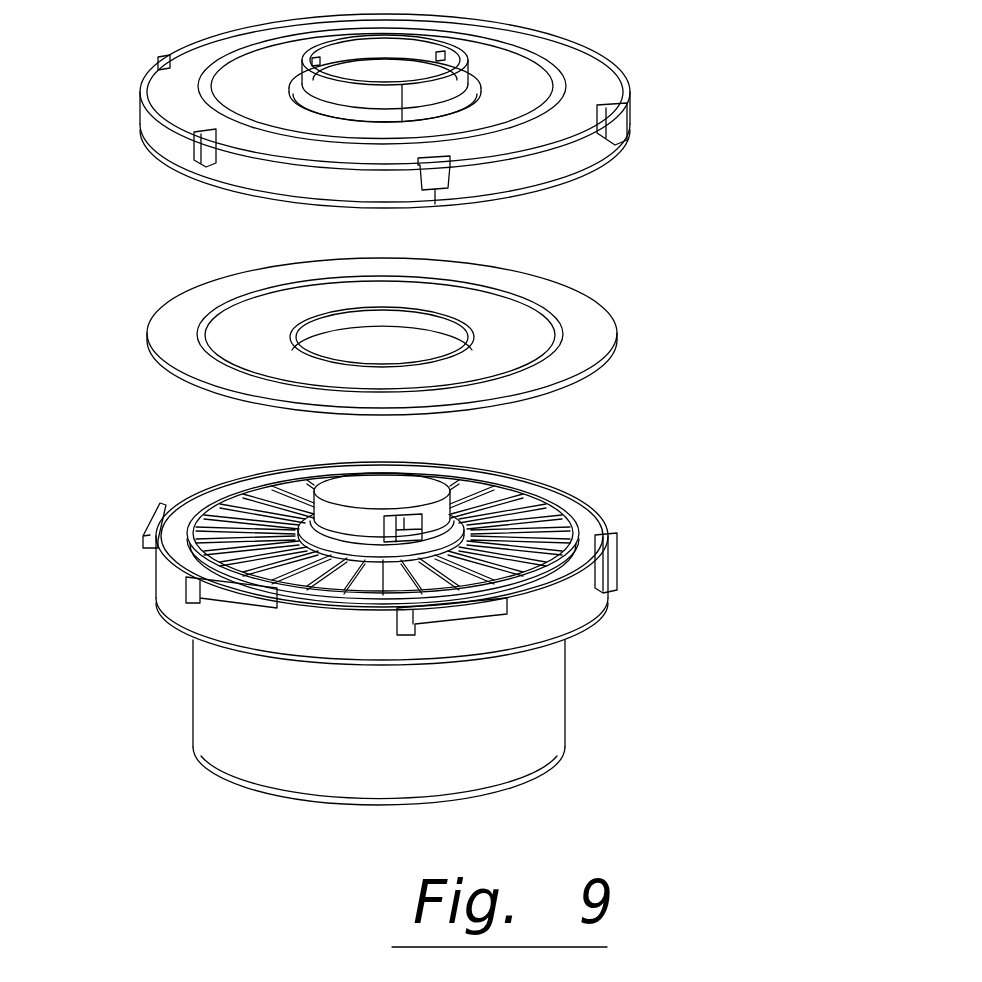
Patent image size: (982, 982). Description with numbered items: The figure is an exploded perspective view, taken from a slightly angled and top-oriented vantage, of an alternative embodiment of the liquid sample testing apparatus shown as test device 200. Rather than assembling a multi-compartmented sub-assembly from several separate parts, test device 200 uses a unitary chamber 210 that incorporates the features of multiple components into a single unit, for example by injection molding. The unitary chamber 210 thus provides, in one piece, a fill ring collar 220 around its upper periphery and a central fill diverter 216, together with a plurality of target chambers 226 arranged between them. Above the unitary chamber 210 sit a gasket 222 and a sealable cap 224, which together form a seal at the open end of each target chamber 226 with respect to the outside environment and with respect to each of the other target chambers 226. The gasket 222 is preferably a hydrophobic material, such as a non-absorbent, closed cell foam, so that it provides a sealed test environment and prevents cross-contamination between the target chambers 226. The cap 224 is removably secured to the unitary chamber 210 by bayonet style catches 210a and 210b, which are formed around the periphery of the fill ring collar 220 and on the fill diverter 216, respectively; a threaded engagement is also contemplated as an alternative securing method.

The test device 200 is at (123, 738).
The unitary chamber 210 is at (637, 637).
The bayonet style catch 210a is at (463, 613).
The bayonet style catch 210b is at (405, 530).
The fill diverter 216 is at (381, 517).
The fill ring collar 220 is at (580, 523).
The gasket 222 is at (596, 332).
The cap 224 is at (592, 93).
The target chamber 226 is at (537, 528).